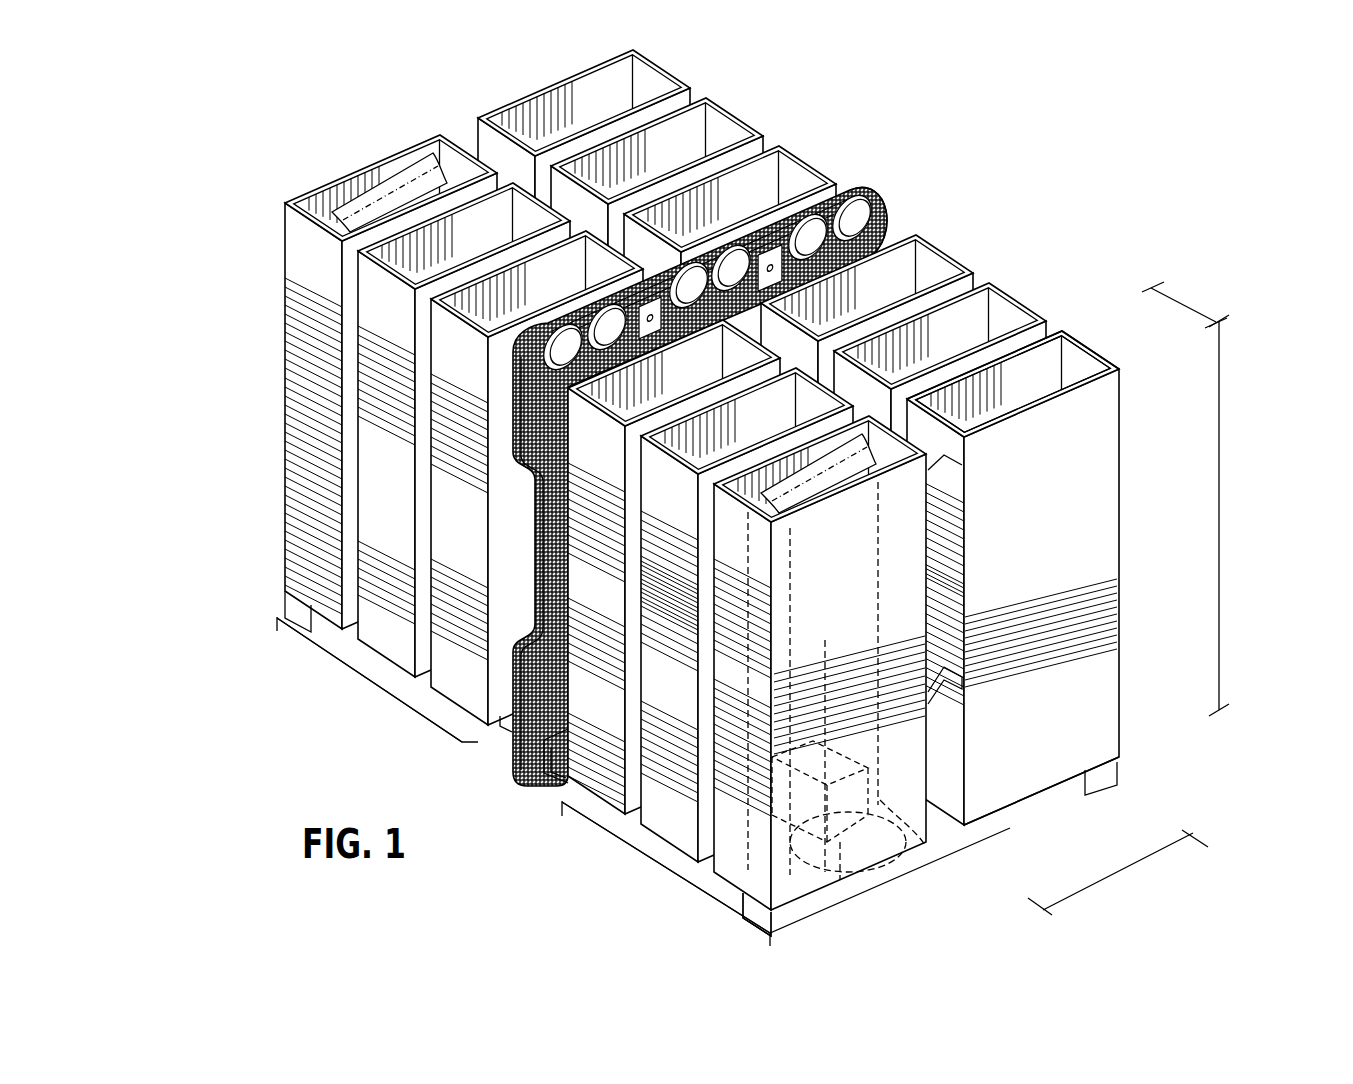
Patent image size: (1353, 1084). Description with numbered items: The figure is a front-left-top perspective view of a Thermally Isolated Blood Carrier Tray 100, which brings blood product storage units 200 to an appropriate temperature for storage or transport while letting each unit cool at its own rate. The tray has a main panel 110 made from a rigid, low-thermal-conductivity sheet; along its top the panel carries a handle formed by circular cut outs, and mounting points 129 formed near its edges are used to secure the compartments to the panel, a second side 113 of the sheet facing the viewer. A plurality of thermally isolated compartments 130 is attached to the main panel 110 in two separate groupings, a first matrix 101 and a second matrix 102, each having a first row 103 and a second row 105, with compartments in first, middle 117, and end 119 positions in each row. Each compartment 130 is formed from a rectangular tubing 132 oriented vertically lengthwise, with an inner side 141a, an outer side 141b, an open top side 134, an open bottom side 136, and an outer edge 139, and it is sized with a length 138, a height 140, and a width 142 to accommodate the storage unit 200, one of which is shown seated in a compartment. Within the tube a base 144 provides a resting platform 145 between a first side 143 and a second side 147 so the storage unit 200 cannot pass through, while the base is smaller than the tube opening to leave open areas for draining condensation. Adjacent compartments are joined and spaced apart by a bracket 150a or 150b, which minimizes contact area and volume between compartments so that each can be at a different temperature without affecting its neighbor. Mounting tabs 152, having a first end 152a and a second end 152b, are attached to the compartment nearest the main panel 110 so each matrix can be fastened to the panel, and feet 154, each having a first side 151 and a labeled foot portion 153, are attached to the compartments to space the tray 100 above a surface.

The Thermally Isolated Blood Carrier Tray 100 is at (172, 135).
The first matrix 101 is at (595, 868).
The second matrix 102 is at (312, 684).
The first row 103 is at (372, 706).
The second row 105 is at (645, 45).
The main panel 110 is at (708, 461).
The second side 113 is at (614, 629).
The middle position 117 is at (686, 656).
The end position 119 is at (798, 687).
The mounting points 129 is at (465, 524).
The thermally isolated compartment 130 is at (1122, 372).
The rectangular tubing 132 is at (972, 610).
The open top side 134 is at (1032, 367).
The open bottom side 136 is at (1040, 793).
The length 138 is at (1122, 876).
The outer edge 139 is at (285, 603).
The height 140 is at (1220, 512).
The inner side 141a is at (526, 188).
The outer side 141b is at (368, 467).
The width 142 is at (1180, 312).
The first side 143 is at (713, 915).
The base 144 is at (871, 855).
The resting platform 145 is at (857, 873).
The second side 147 is at (890, 846).
The bracket 150a is at (935, 812).
The bracket 150b is at (627, 683).
The first side 151 is at (752, 928).
The mounting tabs 152 is at (790, 288).
The first end 152a is at (840, 178).
The second end 152b is at (795, 288).
The foot 153 is at (800, 918).
The feet 154 is at (1112, 774).
The storage unit 200 is at (386, 200).